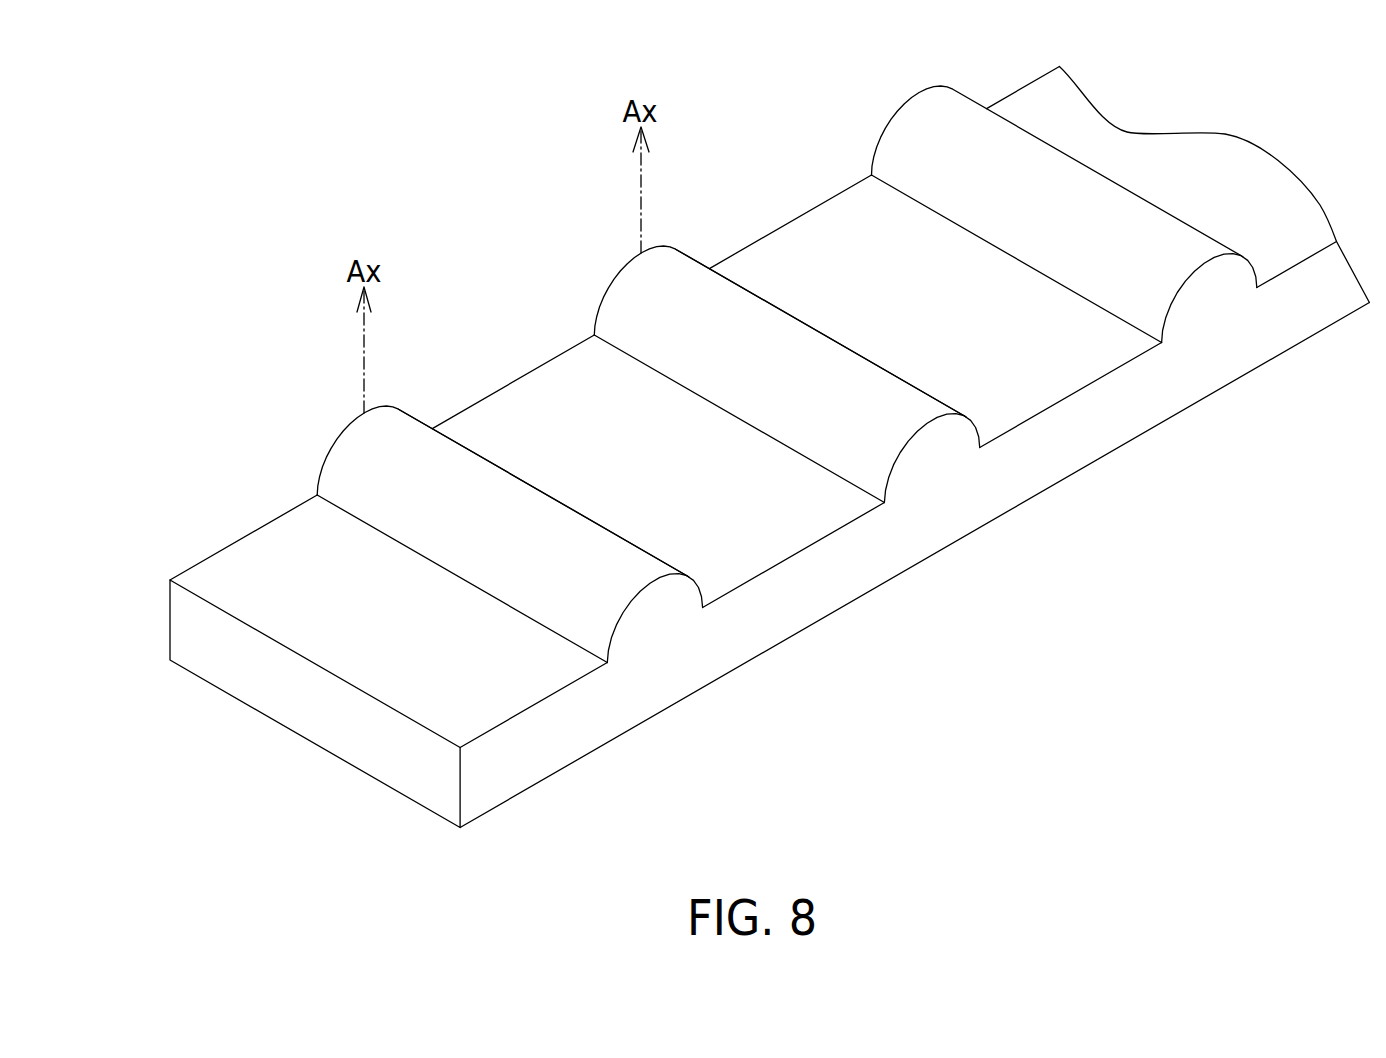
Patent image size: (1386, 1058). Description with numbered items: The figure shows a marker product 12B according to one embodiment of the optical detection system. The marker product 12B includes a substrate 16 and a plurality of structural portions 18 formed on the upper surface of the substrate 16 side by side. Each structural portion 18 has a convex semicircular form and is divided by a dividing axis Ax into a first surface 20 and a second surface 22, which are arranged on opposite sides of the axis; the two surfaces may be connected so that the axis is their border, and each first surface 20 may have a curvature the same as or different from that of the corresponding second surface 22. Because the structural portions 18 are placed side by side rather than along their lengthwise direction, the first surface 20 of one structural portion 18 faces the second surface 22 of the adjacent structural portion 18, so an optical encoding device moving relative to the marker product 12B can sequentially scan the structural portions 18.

The marker product 12B is at (769, 463).
The substrate 16 is at (567, 728).
The structural portion 18 is at (732, 435).
The first surface 20 is at (295, 467).
The second surface 22 is at (428, 402).